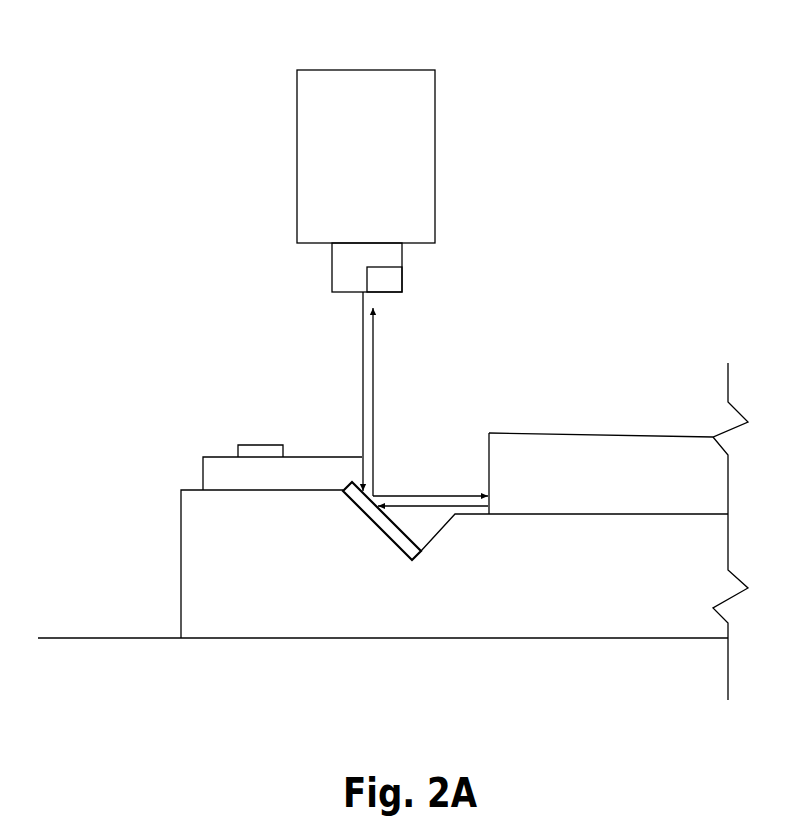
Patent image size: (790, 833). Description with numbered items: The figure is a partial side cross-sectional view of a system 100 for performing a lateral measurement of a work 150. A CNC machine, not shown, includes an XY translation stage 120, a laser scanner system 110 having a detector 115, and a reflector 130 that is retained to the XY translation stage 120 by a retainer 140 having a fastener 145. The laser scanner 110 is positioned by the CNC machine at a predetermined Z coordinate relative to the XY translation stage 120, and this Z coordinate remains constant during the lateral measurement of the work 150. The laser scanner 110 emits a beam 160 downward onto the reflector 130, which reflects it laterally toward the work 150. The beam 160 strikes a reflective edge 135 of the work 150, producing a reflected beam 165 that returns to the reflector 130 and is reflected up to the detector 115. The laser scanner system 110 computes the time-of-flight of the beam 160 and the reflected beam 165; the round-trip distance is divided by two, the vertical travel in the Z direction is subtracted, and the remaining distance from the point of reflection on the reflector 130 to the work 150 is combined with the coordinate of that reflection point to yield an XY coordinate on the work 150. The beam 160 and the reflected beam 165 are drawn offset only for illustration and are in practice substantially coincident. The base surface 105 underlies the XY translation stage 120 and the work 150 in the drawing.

The system 100 is at (697, 35).
The substrate / base surface 105 is at (110, 638).
The laser scanner system 110 is at (437, 107).
The detector 115 is at (395, 280).
The XY translation stage 120 is at (317, 617).
The reflector 130 is at (407, 548).
The reflective edge 135 is at (489, 457).
The retainer 140 is at (208, 458).
The fastener 145 is at (250, 445).
The work 150 is at (610, 442).
The beam 160 is at (362, 367).
The reflected beam 165 is at (432, 506).